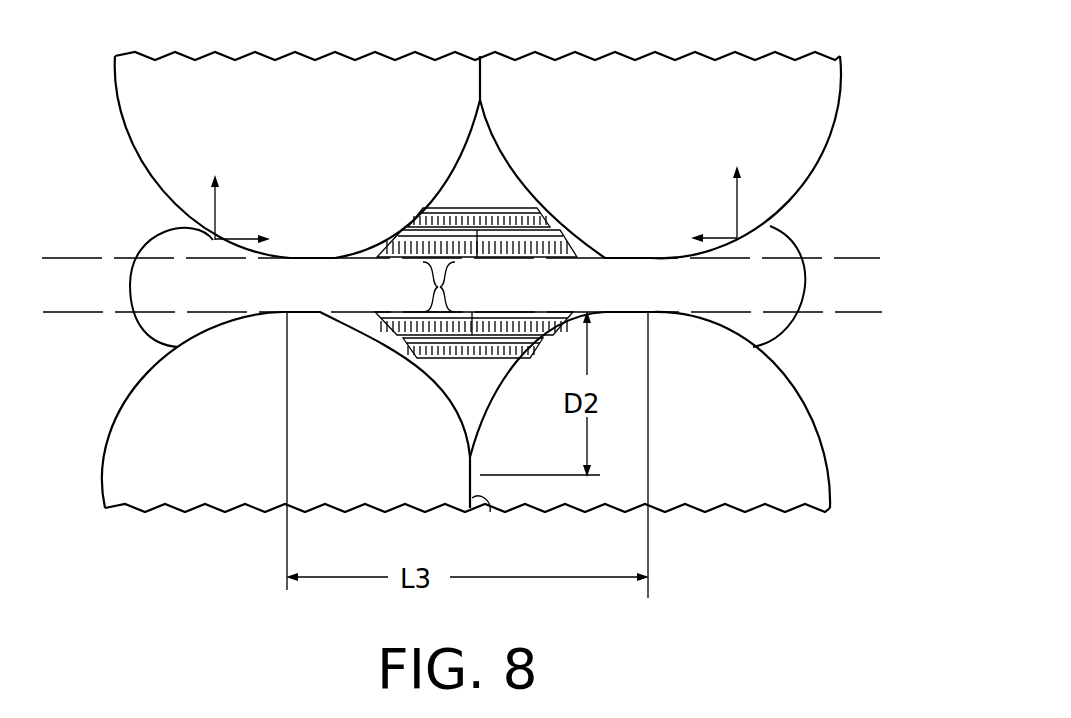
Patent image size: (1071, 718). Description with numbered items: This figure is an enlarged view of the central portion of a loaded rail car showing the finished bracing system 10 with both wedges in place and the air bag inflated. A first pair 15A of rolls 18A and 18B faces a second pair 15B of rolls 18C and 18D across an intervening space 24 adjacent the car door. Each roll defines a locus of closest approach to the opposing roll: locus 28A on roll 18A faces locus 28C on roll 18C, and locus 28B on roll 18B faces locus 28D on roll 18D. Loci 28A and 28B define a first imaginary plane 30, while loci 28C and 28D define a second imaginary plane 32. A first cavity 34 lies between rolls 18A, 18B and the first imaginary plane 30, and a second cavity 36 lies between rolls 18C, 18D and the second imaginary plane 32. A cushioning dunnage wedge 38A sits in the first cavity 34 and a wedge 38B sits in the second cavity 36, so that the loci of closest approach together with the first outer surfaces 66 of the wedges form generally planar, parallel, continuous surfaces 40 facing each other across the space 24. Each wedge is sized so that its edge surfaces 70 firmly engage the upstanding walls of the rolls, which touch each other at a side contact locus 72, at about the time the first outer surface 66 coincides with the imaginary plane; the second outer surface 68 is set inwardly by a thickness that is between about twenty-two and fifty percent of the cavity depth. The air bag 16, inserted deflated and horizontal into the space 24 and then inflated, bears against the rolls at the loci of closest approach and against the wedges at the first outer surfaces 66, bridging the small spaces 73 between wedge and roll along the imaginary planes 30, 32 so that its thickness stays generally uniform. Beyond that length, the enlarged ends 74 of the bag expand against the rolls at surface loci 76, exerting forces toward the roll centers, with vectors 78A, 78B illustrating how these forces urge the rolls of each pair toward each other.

The bracing system 10 is at (826, 48).
The first pair of rolls 15A is at (134, 384).
The second pair of rolls 15B is at (121, 128).
The air bag 16 is at (792, 236).
The roll 18A is at (227, 458).
The roll 18B is at (745, 458).
The roll 18C is at (277, 118).
The roll 18D is at (616, 118).
The intervening space 24 is at (583, 285).
The locus of closest approach 28A is at (285, 315).
The locus of closest approach 28B is at (653, 315).
The locus of closest approach 28C is at (295, 257).
The locus of closest approach 28D is at (662, 257).
The first imaginary plane 30 is at (82, 314).
The second imaginary plane 32 is at (78, 256).
The first cavity 34 is at (465, 410).
The second cavity 36 is at (477, 177).
The wedge 38A is at (430, 372).
The wedge 38B is at (503, 203).
The generally planar surfaces 40 is at (420, 287).
The first outer surface 66 is at (467, 287).
The second outer surface 68 is at (467, 408).
The edge surface 70 is at (380, 328).
The side contact locus 72 is at (490, 512).
The space 73 is at (360, 260).
The enlarged ends 74 is at (147, 250).
The surface loci 76 is at (213, 240).
The force vector 78A is at (236, 238).
The force vector 78B is at (213, 203).